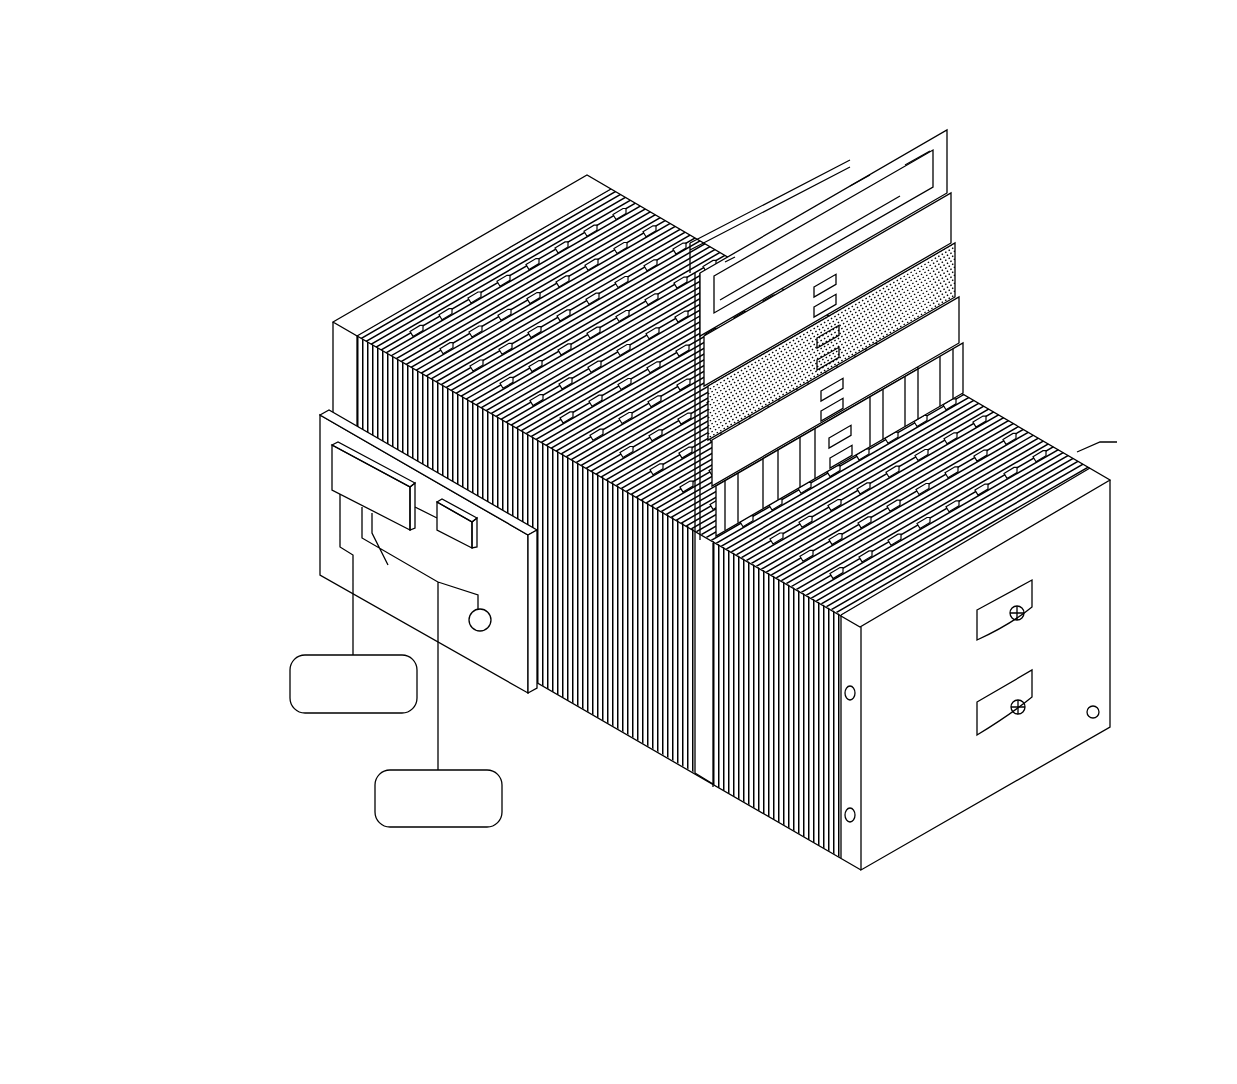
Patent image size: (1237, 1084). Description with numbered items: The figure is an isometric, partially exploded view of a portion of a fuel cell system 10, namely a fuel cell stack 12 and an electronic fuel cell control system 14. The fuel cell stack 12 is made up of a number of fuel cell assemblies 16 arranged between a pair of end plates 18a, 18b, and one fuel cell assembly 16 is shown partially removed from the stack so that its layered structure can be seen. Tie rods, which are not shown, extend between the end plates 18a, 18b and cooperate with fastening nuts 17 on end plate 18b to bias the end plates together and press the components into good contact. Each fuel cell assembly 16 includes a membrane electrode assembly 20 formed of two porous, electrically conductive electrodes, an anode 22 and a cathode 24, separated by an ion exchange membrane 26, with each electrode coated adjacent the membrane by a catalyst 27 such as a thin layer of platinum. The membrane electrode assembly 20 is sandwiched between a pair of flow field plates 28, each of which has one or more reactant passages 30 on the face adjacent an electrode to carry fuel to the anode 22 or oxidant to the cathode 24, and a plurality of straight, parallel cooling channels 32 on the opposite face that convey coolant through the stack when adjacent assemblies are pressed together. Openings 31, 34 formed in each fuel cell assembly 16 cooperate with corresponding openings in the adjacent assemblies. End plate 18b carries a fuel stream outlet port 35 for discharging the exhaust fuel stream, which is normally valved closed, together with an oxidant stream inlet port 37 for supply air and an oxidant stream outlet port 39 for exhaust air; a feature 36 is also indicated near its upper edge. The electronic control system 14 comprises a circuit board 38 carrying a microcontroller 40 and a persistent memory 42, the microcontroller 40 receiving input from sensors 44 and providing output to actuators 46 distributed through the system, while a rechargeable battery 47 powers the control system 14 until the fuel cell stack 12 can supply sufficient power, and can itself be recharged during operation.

The fuel cell system 10 is at (347, 177).
The fuel cell stack 12 is at (638, 148).
The electronic fuel cell control system 14 is at (300, 805).
The fuel cell assembly 16 is at (947, 123).
The fastening nuts 17 is at (1025, 613).
The end plate 18a is at (487, 243).
The end plate 18b is at (1095, 570).
The membrane electrode assembly 20 is at (955, 187).
The anode 22 is at (965, 215).
The cathode 24 is at (965, 315).
The ion exchange membrane 26 is at (965, 265).
The catalyst 27 is at (773, 317).
The flow field plate 28 is at (955, 160).
The reactant passage 30 is at (917, 158).
The opening 31 is at (820, 210).
The cooling channels 32 is at (847, 182).
The opening 34 is at (858, 183).
The fuel stream outlet port 35 is at (1100, 712).
The tie rod region 36 is at (1108, 440).
The oxidant stream inlet port 37 is at (857, 693).
The circuit board 38 is at (327, 580).
The oxidant stream outlet port 39 is at (845, 820).
The microcontroller 40 is at (337, 468).
The persistent memory 42 is at (465, 533).
The sensors 44 is at (293, 710).
The actuators 46 is at (377, 817).
The rechargeable battery 47 is at (487, 627).